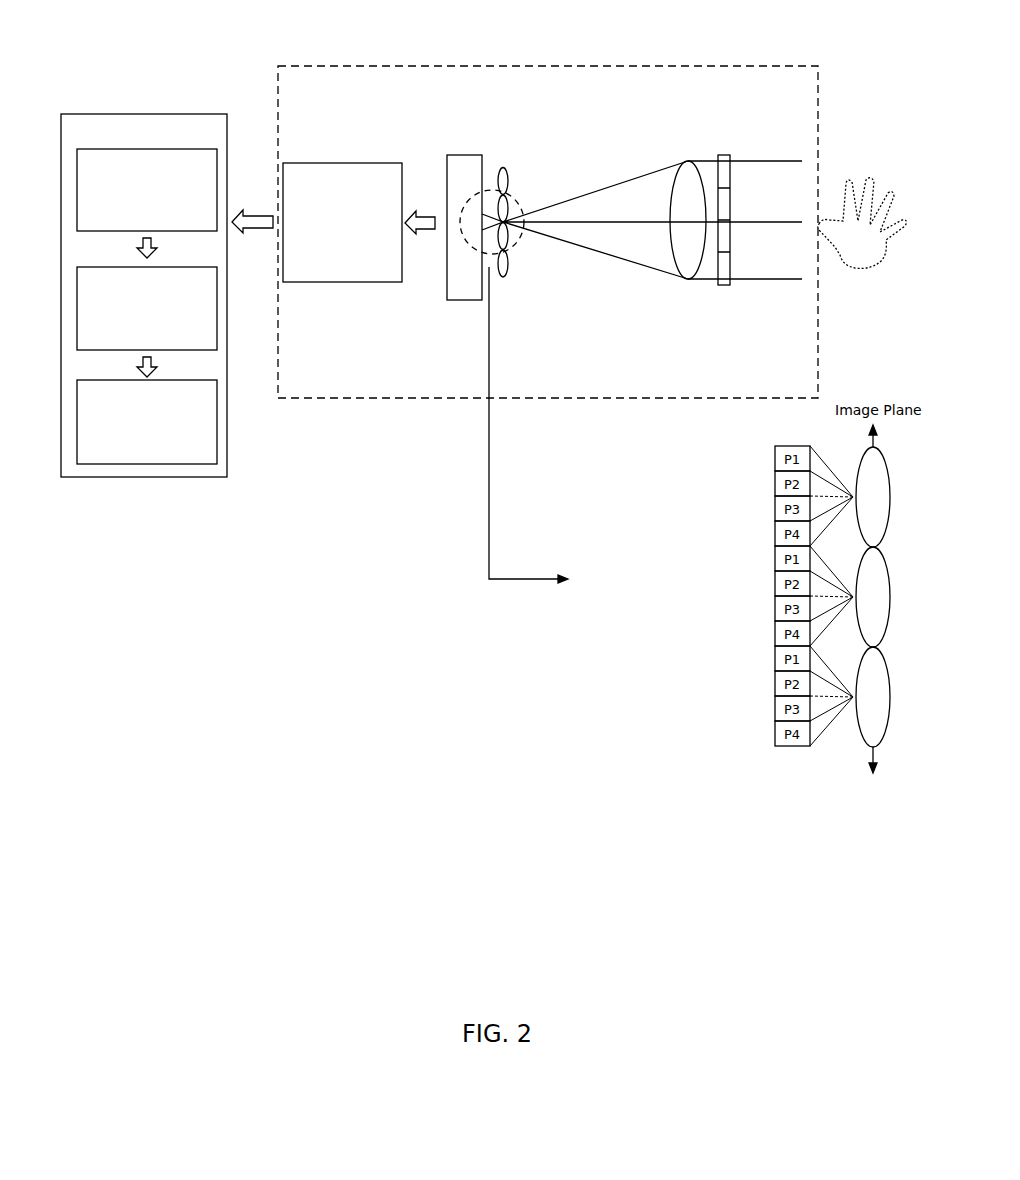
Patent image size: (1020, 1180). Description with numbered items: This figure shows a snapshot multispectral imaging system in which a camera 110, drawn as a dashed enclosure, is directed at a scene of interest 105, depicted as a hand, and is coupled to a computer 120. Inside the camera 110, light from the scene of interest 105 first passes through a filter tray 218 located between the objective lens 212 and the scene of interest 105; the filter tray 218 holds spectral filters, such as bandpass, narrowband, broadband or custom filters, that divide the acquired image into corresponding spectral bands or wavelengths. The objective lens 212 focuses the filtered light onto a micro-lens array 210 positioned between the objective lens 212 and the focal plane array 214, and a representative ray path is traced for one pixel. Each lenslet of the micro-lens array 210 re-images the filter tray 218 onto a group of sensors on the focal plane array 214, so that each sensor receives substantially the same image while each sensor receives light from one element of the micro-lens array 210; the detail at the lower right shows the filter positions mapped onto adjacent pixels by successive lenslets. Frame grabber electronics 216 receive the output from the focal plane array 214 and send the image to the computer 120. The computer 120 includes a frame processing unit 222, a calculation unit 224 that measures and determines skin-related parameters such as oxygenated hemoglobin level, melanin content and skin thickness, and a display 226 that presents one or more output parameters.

The scene of interest 105 is at (852, 182).
The camera 110 is at (523, 66).
The computer 120 is at (147, 112).
The micro-lens array 210 is at (503, 277).
The objective lens 212 is at (688, 161).
The focal plane array 214 is at (463, 155).
The frame grabber electronics 216 is at (362, 285).
The filter tray 218 is at (813, 342).
The frame processing unit 222 is at (77, 186).
The calculation unit 224 is at (77, 310).
The display 226 is at (77, 423).